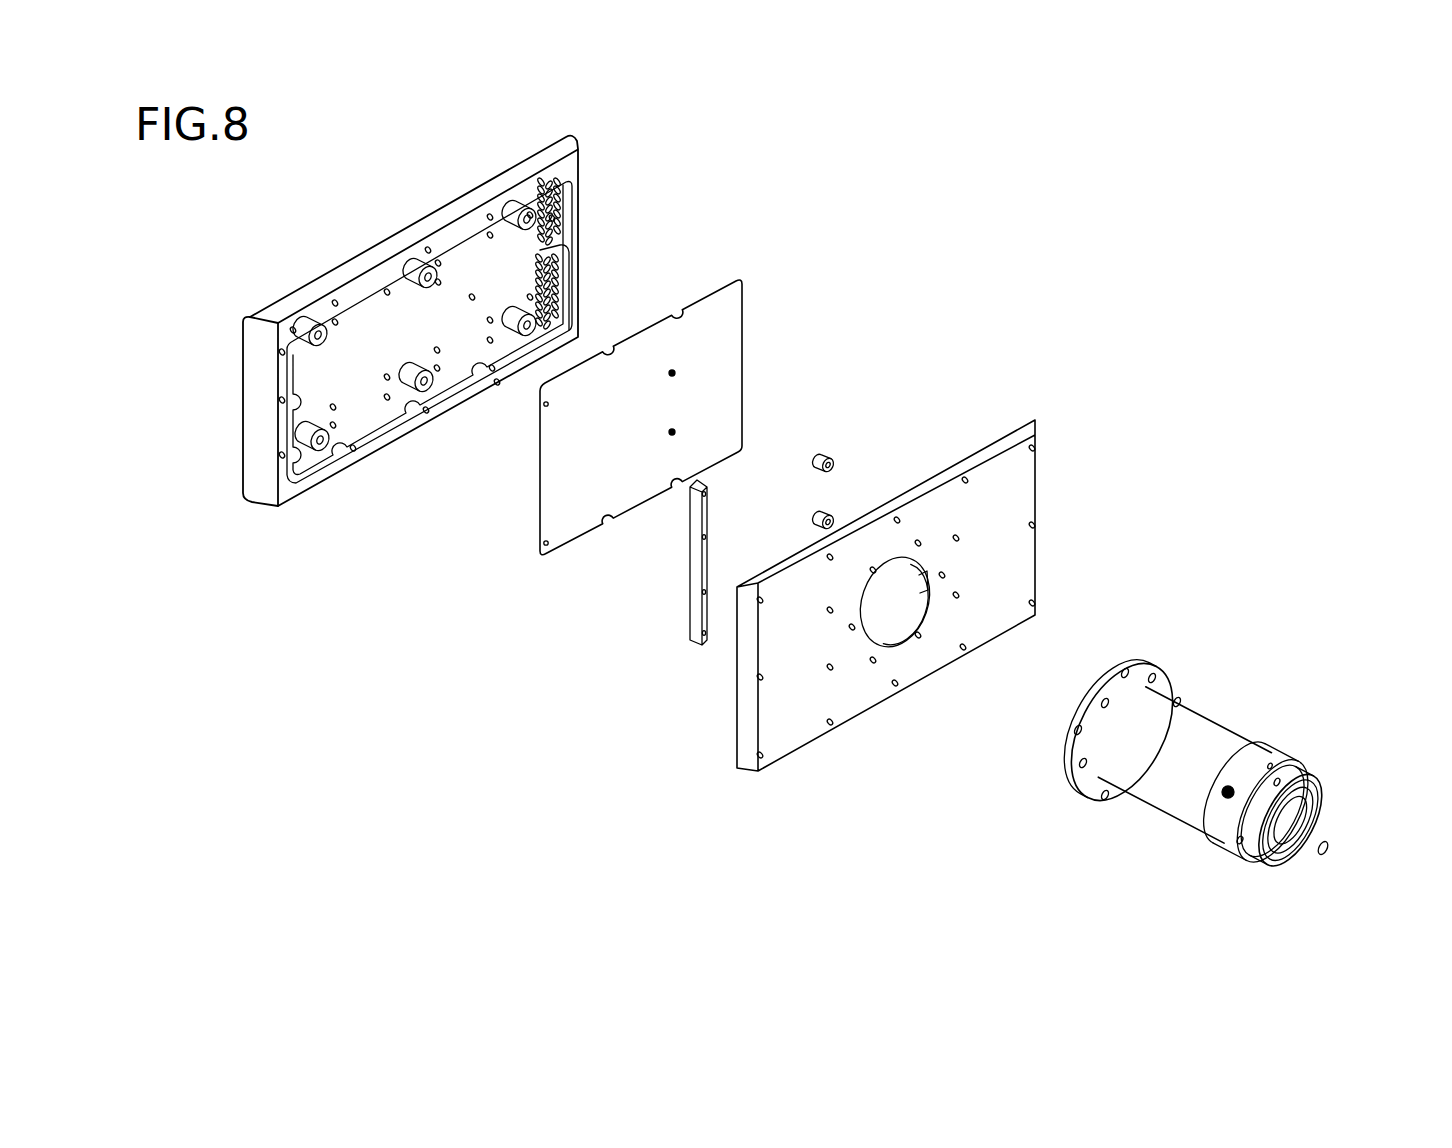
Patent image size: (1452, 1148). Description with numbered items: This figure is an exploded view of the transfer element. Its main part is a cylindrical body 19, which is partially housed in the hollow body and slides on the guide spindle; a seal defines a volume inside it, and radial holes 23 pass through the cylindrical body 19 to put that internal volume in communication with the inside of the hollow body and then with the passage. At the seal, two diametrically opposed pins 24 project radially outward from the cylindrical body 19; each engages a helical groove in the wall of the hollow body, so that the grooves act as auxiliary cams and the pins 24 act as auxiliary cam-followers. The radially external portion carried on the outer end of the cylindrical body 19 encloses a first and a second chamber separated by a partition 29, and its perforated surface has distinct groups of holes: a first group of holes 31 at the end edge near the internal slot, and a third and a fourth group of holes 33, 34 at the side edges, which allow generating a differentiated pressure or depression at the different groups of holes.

The cylindrical body 19 is at (1222, 725).
The radial holes 23 is at (1248, 775).
The pins 24 is at (1327, 847).
The partition 29 is at (718, 352).
The first group of holes 31 is at (570, 215).
The third group of holes 33 is at (383, 405).
The fourth group of holes 34 is at (392, 285).